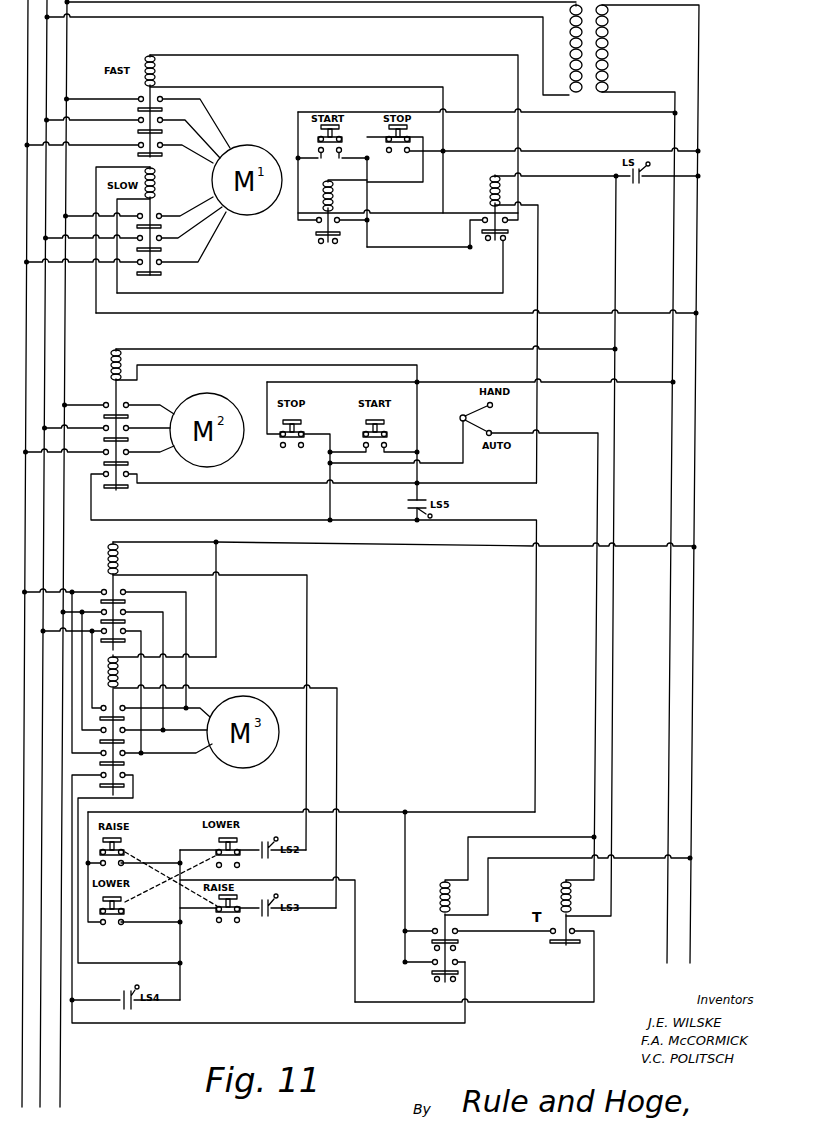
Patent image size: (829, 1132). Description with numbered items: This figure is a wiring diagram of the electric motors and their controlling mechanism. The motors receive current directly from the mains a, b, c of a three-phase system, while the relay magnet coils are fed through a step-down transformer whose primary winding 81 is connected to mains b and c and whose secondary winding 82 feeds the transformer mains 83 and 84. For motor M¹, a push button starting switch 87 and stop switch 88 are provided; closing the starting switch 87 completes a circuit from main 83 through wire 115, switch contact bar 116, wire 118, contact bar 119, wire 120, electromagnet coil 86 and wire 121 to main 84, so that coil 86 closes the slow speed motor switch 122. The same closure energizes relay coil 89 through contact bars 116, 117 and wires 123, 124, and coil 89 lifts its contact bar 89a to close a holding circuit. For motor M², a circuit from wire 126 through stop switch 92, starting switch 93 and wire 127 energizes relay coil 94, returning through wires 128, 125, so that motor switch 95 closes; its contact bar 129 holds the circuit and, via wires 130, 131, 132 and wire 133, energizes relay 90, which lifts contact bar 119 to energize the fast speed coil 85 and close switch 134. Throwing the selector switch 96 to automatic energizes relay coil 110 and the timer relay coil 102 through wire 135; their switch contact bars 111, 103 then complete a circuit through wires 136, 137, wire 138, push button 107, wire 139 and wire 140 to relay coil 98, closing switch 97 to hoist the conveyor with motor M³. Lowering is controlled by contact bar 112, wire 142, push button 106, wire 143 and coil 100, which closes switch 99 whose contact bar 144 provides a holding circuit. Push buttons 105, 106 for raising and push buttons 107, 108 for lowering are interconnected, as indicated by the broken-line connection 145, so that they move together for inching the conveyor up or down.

The main a is at (28, 340).
The main b is at (45, 356).
The main c is at (65, 368).
The primary winding 81 is at (569, 52).
The secondary winding 82 is at (609, 50).
The transformer main 83 is at (674, 241).
The transformer main 84 is at (700, 230).
The electromagnet coil 85 is at (158, 72).
The electromagnet coil 86 is at (158, 185).
The push button starting switch 87 is at (298, 130).
The stop switch 88 is at (410, 133).
The relay coil 89 is at (334, 200).
The contact bar 89a is at (320, 230).
The relay 90 is at (488, 194).
The stop switch 92 is at (302, 425).
The starting switch 93 is at (385, 424).
The relay coil 94 is at (111, 360).
The motor switch 95 is at (130, 455).
The selector switch 96 is at (478, 409).
The switch 97 is at (126, 612).
The relay coil 98 is at (122, 566).
The switch 99 is at (126, 742).
The coil 100 is at (120, 680).
The relay coil 102 is at (560, 897).
The switch 103 is at (560, 946).
The push button 105 is at (122, 842).
The push button 106 is at (240, 900).
The push button 107 is at (237, 847).
The push button 108 is at (122, 903).
The relay coil 110 is at (440, 898).
The switch contact bar 111 is at (458, 942).
The contact bar 112 is at (440, 981).
The wire 115 is at (578, 116).
The switch contact bar 116 is at (342, 147).
The contact bar 117 is at (392, 153).
The wire 118 is at (400, 247).
The contact bar 119 is at (509, 234).
The wire 120 is at (372, 286).
The wire 121 is at (297, 313).
The motor switch 122 is at (158, 258).
The wire 123 is at (423, 215).
The wire 124 is at (607, 153).
The wire 125 is at (614, 270).
The wire 126 is at (590, 386).
The wire 127 is at (420, 382).
The wire 128 is at (360, 348).
The contact bar 129 is at (118, 490).
The wire 130 is at (330, 468).
The wire 131 is at (304, 506).
The wire 132 is at (248, 486).
The wire 133 is at (548, 178).
The switch 134 is at (143, 125).
The wire 135 is at (544, 655).
The wire 136 is at (494, 803).
The wire 137 is at (404, 855).
The wire 138 is at (540, 1004).
The wire 139 is at (228, 711).
The wire 140 is at (440, 548).
The wire 142 is at (300, 1018).
The wire 143 is at (338, 722).
The contact bar 144 is at (133, 789).
The connection 145 is at (163, 877).